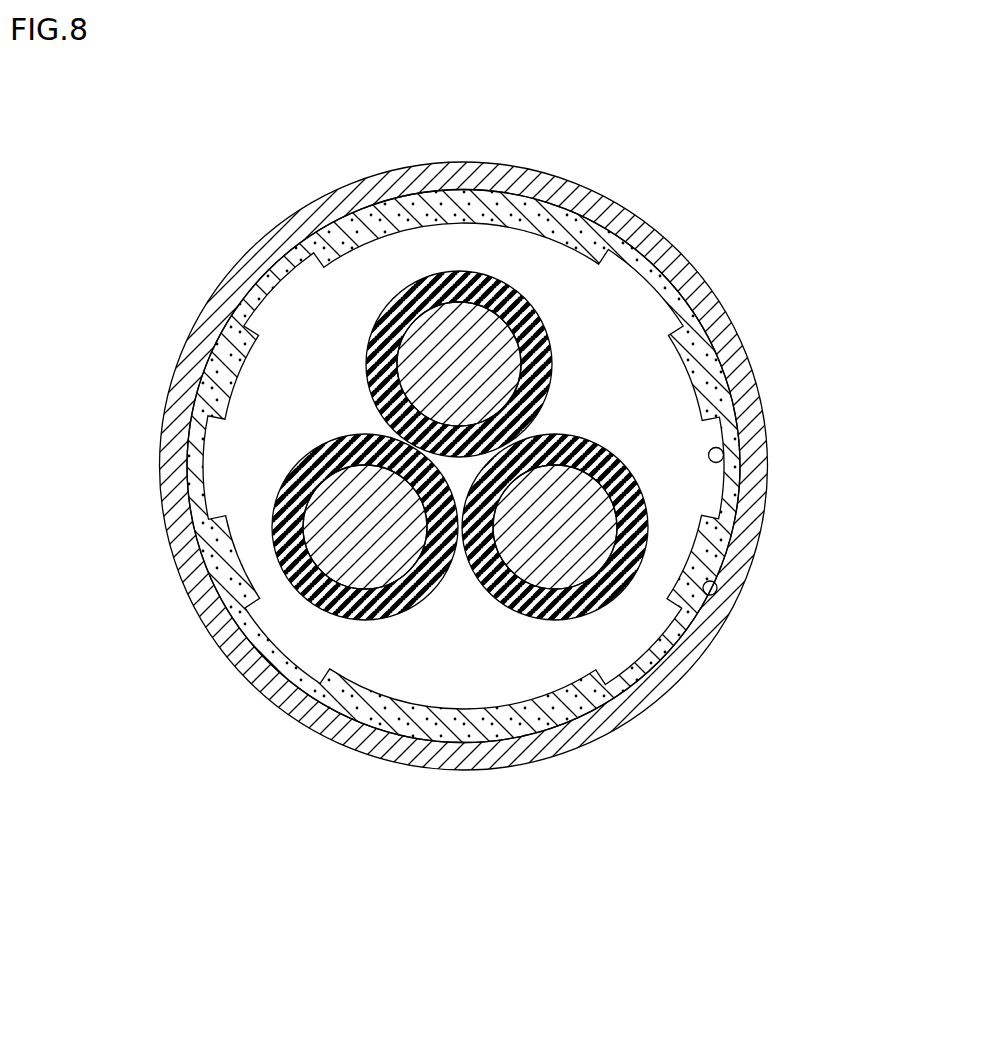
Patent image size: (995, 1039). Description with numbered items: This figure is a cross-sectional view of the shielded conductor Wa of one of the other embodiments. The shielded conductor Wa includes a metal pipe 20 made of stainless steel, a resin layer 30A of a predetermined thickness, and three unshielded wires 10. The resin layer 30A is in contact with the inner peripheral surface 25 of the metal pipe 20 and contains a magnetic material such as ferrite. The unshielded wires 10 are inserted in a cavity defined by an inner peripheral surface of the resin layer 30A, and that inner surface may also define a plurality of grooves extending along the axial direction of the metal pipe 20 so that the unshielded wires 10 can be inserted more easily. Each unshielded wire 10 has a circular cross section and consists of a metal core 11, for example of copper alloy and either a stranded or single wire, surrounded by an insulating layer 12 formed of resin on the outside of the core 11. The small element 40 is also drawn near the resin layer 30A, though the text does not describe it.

The shielded conductor Wa is at (508, 490).
The unshielded wire 10 is at (494, 492).
The core 11 is at (443, 350).
The insulating layer 12 is at (372, 337).
The metal pipe 20 is at (690, 292).
The inner peripheral surface 25 is at (712, 588).
The resin layer 30A is at (728, 505).
The filler element 40 is at (722, 463).